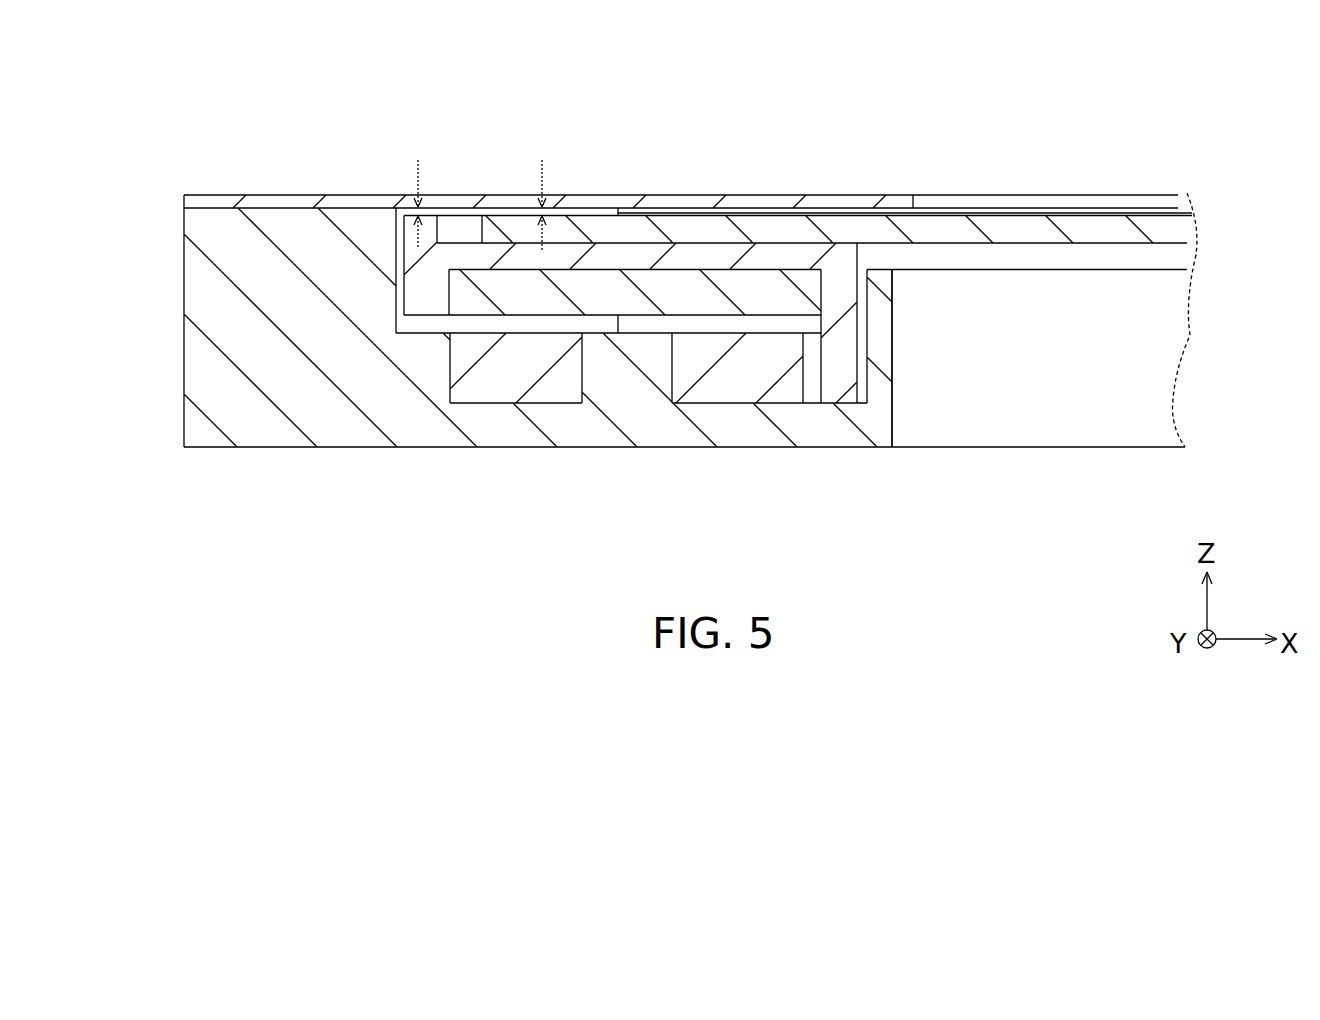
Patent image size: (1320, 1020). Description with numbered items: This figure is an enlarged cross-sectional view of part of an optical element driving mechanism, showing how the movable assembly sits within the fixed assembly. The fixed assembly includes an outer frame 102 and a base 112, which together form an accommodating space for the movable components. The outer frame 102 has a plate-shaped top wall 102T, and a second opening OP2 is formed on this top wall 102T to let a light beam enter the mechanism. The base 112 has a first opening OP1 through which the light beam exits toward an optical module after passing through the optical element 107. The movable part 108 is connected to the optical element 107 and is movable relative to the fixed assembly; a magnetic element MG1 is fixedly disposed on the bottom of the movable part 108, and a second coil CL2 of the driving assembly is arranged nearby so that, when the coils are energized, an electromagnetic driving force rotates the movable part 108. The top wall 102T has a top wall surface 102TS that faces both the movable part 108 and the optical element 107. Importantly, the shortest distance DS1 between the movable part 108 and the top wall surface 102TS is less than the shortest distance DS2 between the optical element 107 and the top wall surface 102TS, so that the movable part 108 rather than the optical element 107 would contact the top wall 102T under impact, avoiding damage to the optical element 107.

The outer frame 102 is at (246, 188).
The top wall 102T is at (308, 203).
The top wall surface 102TS is at (452, 211).
The shortest distance DS1 is at (387, 203).
The shortest distance DS2 is at (573, 205).
The optical element 107 is at (670, 232).
The magnetic element MG1 is at (763, 297).
The second opening OP2 is at (918, 203).
The movable part 108 is at (428, 285).
The base 112 is at (340, 413).
The second coil CL2 is at (502, 377).
The first opening OP1 is at (893, 417).